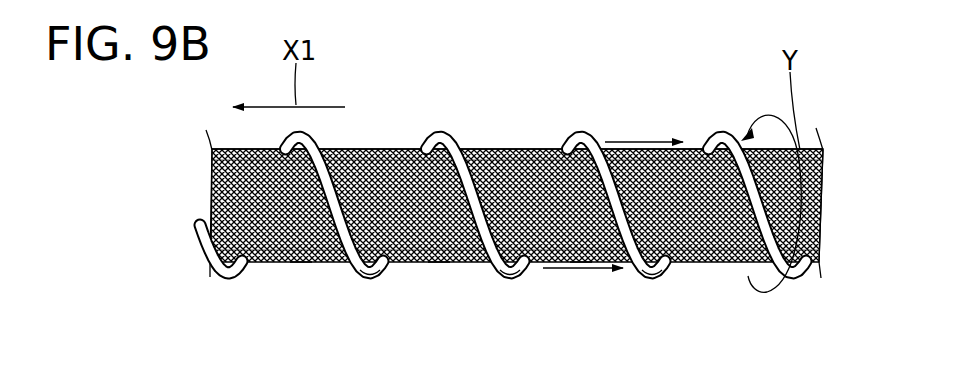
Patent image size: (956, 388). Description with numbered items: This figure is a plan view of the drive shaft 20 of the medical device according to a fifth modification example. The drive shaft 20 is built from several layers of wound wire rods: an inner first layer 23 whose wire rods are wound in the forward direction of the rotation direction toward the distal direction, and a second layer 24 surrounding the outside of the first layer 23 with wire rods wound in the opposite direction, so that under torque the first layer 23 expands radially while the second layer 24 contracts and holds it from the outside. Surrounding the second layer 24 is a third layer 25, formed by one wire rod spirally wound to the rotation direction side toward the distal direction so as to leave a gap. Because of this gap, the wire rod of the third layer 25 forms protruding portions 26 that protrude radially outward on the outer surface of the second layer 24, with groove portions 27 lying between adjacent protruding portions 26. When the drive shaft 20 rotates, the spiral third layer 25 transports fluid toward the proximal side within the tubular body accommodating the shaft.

The drive shaft 20 is at (392, 148).
The first layer 23 is at (490, 148).
The second layer 24 is at (541, 148).
The third layer 25 is at (583, 148).
The protruding portions 26 is at (368, 274).
The groove portions 27 is at (300, 264).